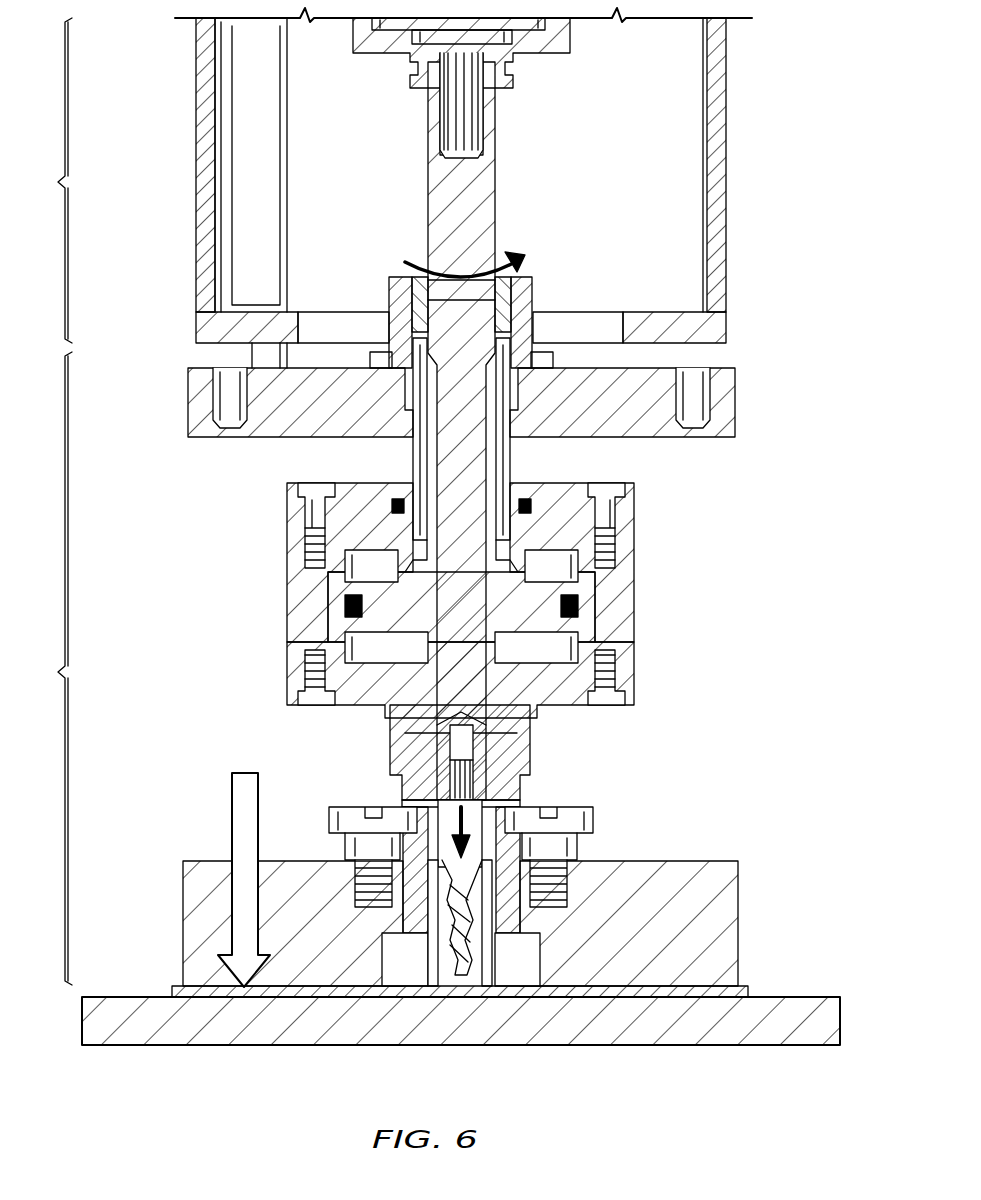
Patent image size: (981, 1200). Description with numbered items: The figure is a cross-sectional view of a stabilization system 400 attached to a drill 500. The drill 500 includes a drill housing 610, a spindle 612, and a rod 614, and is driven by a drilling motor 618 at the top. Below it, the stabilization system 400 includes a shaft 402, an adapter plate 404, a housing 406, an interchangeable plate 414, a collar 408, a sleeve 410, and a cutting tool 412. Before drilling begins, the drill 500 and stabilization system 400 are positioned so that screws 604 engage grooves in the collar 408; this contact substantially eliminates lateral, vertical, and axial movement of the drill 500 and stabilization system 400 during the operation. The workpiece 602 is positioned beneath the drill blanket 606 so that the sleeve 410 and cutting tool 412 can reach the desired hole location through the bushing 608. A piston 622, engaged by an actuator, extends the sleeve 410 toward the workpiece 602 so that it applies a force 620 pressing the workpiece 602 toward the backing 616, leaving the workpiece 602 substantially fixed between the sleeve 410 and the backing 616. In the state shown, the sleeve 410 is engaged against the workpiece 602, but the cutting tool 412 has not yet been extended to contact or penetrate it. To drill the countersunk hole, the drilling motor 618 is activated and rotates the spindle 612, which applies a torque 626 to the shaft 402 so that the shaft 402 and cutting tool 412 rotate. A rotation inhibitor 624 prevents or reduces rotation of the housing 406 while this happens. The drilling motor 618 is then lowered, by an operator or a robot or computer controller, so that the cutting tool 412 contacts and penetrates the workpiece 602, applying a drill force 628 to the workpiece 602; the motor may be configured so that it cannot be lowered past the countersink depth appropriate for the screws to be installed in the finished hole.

The drill 500 is at (45, 180).
The stabilization system 400 is at (45, 668).
The drill housing 610 is at (196, 163).
The rod 614 is at (288, 175).
The drilling motor 618 is at (572, 40).
The spindle 612 is at (452, 127).
The shaft 402 is at (428, 214).
The torque 626 is at (404, 262).
The adapter plate 404 is at (188, 390).
The rotation inhibitor 624 is at (372, 468).
The housing 406 is at (287, 506).
The piston 622 is at (560, 578).
The interchangeable plate 414 is at (390, 730).
The collar 408 is at (402, 778).
The drill force 628 is at (466, 826).
The screws 604 is at (329, 820).
The drill blanket 606 is at (183, 910).
The force 620 is at (232, 808).
The bushing 608 is at (382, 960).
The sleeve 410 is at (505, 985).
The cutting tool 412 is at (465, 985).
The workpiece 602 is at (172, 986).
The backing 616 is at (82, 1005).